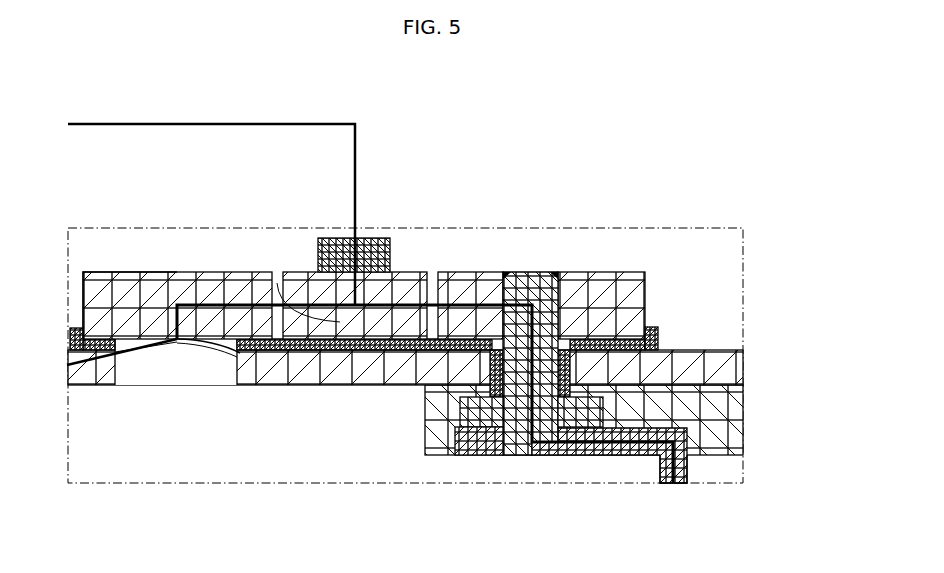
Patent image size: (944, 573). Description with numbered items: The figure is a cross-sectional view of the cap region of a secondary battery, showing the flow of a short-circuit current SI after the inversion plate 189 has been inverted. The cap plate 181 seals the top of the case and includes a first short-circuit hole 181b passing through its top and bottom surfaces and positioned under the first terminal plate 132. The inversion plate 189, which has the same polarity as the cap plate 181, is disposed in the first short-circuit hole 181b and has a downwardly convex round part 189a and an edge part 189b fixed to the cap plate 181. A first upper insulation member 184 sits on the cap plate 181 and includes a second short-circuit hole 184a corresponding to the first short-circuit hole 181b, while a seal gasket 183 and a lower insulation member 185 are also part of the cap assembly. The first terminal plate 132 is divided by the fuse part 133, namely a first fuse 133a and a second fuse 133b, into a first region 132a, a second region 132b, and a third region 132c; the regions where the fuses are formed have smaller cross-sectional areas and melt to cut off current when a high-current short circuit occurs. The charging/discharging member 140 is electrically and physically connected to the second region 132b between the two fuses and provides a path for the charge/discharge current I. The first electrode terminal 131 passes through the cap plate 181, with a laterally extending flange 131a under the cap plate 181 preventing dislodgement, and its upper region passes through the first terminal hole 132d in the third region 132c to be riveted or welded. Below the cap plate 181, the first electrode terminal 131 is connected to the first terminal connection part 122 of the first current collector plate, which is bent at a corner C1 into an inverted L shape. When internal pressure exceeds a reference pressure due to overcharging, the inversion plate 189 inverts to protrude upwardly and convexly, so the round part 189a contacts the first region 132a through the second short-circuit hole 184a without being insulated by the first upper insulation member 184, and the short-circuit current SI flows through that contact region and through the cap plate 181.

The charge/discharge current I is at (207, 122).
The short-circuit current SI is at (223, 303).
The charging/discharging member 140 is at (328, 238).
The fuse part 133 is at (390, 238).
The first fuse 133a is at (373, 271).
The second fuse 133b is at (469, 259).
The first electrode terminal 131 is at (524, 364).
The flange 131a is at (470, 443).
The first terminal plate 132 is at (364, 456).
The first region 132a is at (254, 342).
The second region 132b is at (330, 352).
The third region 132c is at (427, 352).
The first terminal hole 132d is at (540, 271).
The first terminal connection part 122 is at (675, 485).
The corner C1 is at (690, 427).
The cap plate 181 is at (443, 445).
The first short-circuit hole 181b is at (116, 370).
The seal gasket 183 is at (570, 367).
The first upper insulation member 184 is at (448, 263).
The second short-circuit hole 184a is at (160, 336).
The lower insulation member 185 is at (725, 400).
The inversion plate 189 is at (155, 456).
The round part 189a is at (180, 346).
The edge part 189b is at (243, 352).